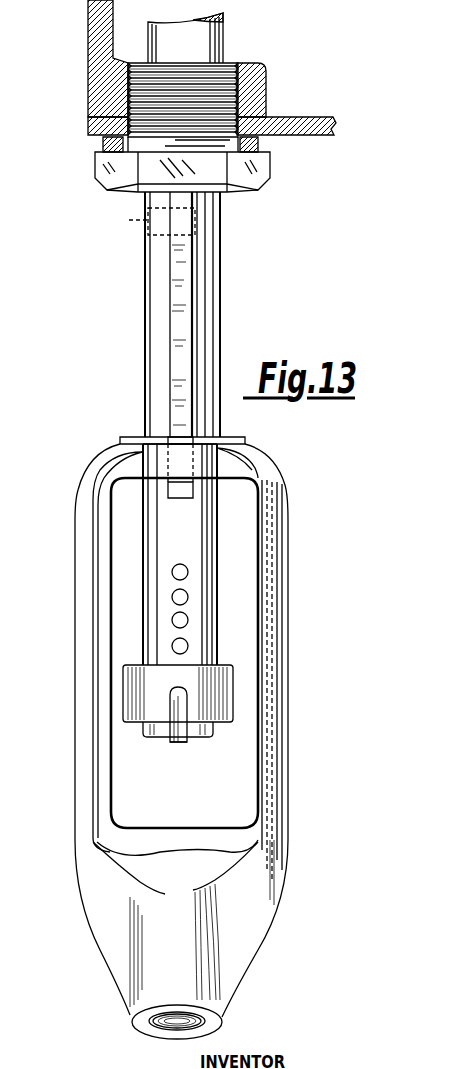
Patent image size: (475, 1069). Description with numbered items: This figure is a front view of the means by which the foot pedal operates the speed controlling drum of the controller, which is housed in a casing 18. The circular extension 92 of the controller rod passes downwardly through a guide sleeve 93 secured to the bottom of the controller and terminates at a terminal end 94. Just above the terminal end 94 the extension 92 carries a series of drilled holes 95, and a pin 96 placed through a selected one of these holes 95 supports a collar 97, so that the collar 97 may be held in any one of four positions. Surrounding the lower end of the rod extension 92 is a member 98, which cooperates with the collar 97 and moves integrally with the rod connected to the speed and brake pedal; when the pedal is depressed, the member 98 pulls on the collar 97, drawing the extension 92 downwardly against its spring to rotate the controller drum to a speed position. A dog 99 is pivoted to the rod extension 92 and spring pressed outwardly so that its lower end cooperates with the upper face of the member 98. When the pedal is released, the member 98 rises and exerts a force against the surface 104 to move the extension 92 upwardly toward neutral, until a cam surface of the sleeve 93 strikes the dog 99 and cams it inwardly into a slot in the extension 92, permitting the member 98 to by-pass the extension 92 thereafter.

The casing 18 is at (333, 130).
The circular extension of the rod 92 is at (223, 40).
The guide sleeve 93 is at (265, 170).
The terminal end 94 is at (165, 738).
The drilled holes 95 is at (172, 648).
The pin 96 is at (181, 743).
The collar 97 is at (143, 693).
The member 98 is at (222, 221).
The dog 99 is at (180, 331).
The surface 104 is at (190, 437).